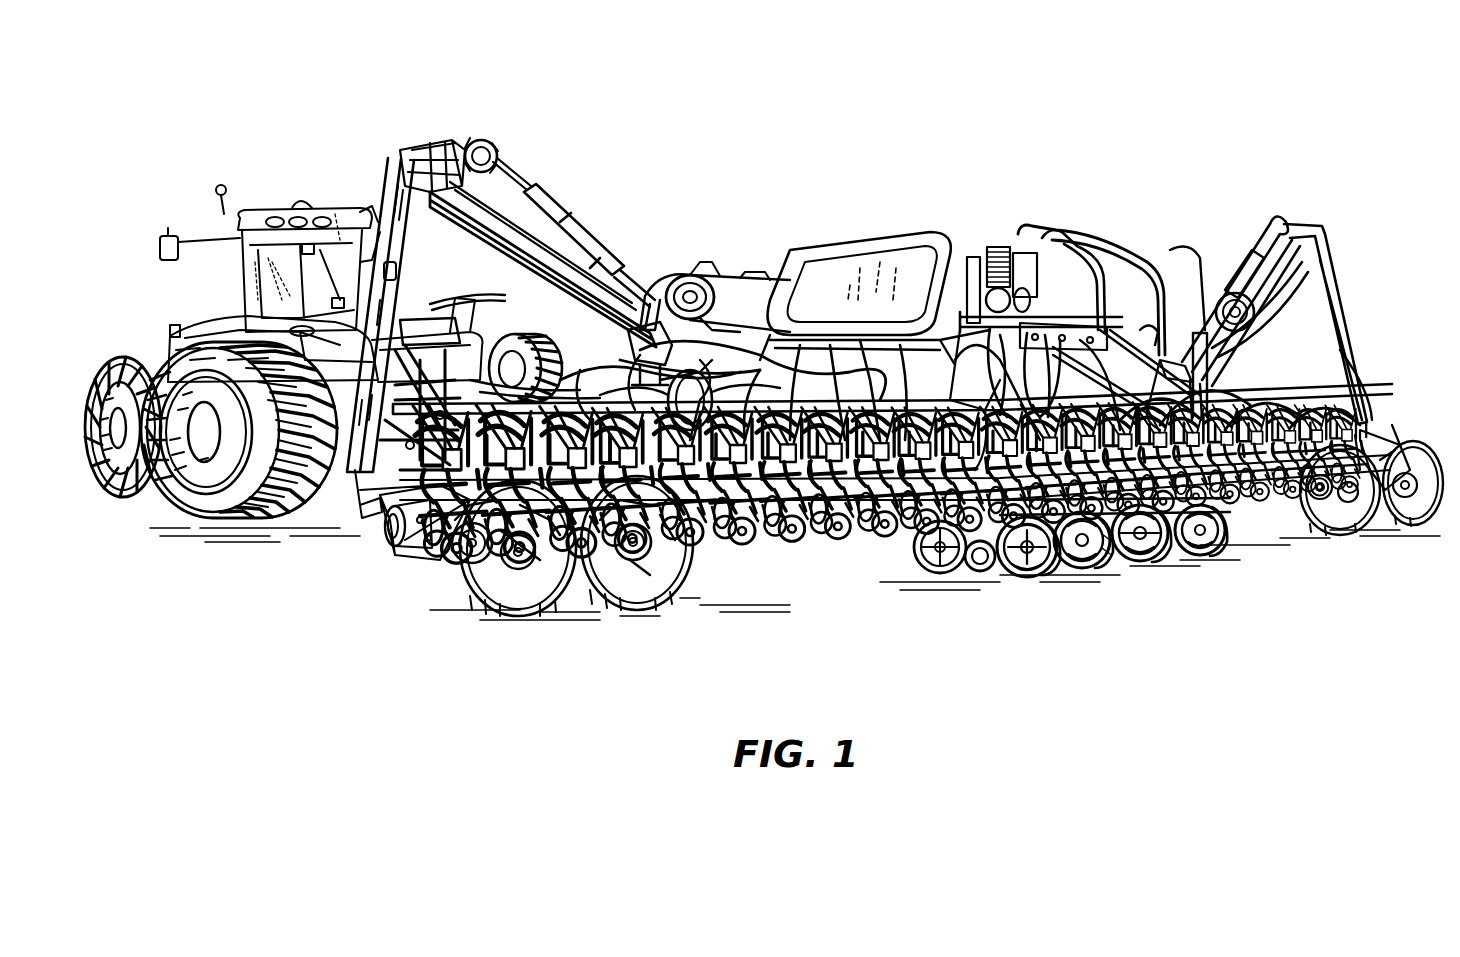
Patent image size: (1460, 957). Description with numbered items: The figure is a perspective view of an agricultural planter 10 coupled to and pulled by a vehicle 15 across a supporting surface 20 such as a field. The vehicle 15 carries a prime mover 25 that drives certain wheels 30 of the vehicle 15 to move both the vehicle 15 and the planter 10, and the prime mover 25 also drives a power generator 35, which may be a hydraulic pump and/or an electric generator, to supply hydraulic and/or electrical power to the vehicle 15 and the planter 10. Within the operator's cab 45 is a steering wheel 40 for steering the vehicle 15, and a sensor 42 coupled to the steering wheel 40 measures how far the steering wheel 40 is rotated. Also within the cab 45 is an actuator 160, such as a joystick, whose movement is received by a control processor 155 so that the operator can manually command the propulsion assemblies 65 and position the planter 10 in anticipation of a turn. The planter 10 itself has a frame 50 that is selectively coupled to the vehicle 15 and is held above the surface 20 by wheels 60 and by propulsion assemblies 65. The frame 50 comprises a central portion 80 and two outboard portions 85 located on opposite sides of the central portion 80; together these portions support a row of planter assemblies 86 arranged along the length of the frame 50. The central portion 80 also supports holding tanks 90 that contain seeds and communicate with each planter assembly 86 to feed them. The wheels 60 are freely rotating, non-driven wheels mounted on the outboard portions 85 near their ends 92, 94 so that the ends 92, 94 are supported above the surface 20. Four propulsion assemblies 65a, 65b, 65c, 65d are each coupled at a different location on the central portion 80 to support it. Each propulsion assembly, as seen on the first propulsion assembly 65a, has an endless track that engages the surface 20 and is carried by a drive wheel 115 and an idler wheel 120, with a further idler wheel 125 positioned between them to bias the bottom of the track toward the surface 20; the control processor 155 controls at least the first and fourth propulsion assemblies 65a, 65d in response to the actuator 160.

The agricultural planter 10 is at (1088, 108).
The vehicle 15 is at (378, 334).
The supporting surface 20 is at (861, 436).
The prime mover 25 is at (240, 283).
The power generator 35 is at (172, 326).
The wheels 30 is at (122, 498).
The steering wheel 40 is at (256, 214).
The sensor 42 is at (242, 298).
The operator's cab 45 is at (345, 232).
The frame 50 is at (345, 532).
The wheels 60 is at (630, 598).
The propulsion assemblies 65 is at (1058, 615).
The first propulsion assembly 65a is at (1018, 578).
The second propulsion assembly 65b is at (1108, 578).
The third propulsion assembly 65c is at (1160, 574).
The fourth propulsion assembly 65d is at (1208, 570).
The central portion 80 is at (923, 305).
The outboard portions 85 is at (438, 605).
The planter assemblies 86 is at (810, 575).
The holding tanks 90 is at (738, 278).
The end 92 is at (1398, 420).
The end 94 is at (300, 548).
The drive wheel 115 is at (925, 574).
The idler wheel 120 is at (1033, 591).
The idler wheel 125 is at (972, 574).
The control processor 155 is at (352, 218).
The actuator 160 is at (366, 205).